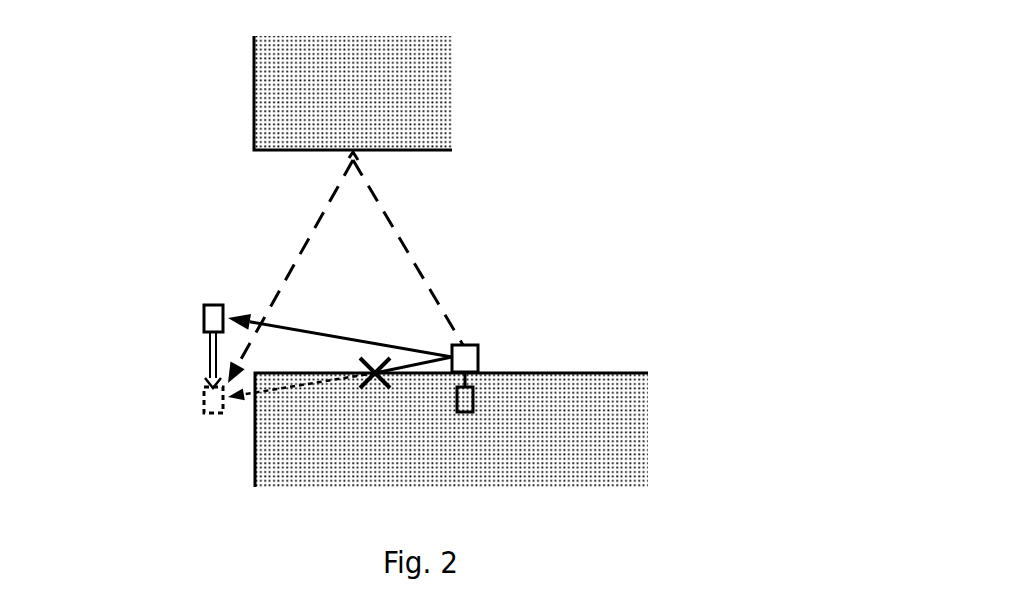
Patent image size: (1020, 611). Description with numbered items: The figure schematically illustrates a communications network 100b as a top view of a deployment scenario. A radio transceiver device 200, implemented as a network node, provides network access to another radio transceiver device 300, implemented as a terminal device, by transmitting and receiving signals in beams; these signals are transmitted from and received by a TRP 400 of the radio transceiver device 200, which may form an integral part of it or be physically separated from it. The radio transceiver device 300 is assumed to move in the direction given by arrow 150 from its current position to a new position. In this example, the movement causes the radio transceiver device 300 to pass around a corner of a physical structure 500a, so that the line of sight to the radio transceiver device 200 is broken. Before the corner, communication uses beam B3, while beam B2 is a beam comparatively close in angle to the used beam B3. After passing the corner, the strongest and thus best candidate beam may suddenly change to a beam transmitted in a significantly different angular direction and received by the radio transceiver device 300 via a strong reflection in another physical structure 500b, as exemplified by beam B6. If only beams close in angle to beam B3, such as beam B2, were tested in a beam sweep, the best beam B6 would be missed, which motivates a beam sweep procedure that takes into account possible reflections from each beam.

The communications network 100b is at (164, 100).
The physical structure 500b is at (452, 97).
The physical structure 500a is at (647, 427).
The TRP 400 is at (478, 358).
The radio transceiver device 200 is at (475, 393).
The radio transceiver device 300 is at (204, 308).
The arrow 150 is at (210, 353).
The beam B3 is at (307, 325).
The beam B6 is at (423, 268).
The beam B2 is at (327, 383).